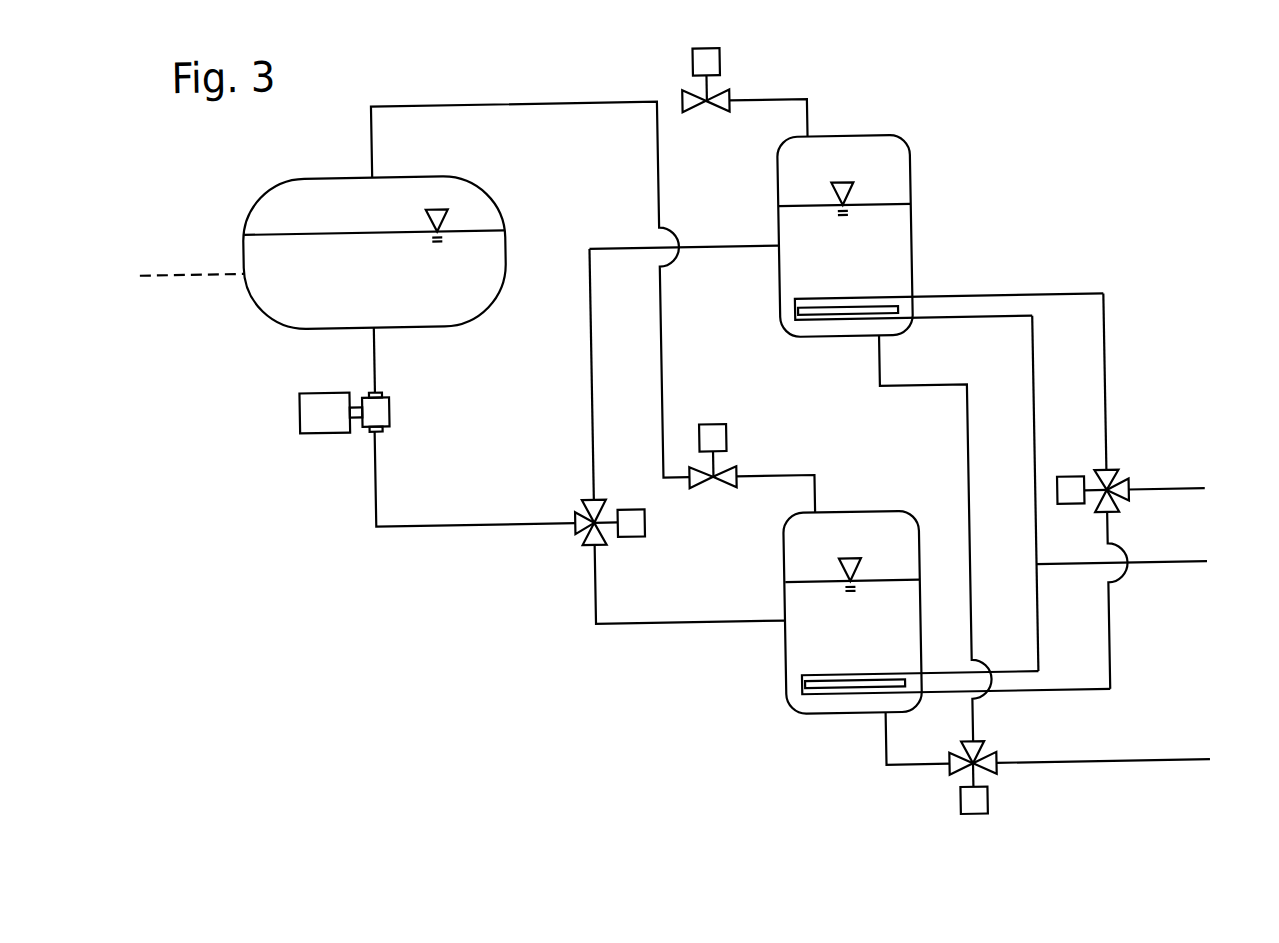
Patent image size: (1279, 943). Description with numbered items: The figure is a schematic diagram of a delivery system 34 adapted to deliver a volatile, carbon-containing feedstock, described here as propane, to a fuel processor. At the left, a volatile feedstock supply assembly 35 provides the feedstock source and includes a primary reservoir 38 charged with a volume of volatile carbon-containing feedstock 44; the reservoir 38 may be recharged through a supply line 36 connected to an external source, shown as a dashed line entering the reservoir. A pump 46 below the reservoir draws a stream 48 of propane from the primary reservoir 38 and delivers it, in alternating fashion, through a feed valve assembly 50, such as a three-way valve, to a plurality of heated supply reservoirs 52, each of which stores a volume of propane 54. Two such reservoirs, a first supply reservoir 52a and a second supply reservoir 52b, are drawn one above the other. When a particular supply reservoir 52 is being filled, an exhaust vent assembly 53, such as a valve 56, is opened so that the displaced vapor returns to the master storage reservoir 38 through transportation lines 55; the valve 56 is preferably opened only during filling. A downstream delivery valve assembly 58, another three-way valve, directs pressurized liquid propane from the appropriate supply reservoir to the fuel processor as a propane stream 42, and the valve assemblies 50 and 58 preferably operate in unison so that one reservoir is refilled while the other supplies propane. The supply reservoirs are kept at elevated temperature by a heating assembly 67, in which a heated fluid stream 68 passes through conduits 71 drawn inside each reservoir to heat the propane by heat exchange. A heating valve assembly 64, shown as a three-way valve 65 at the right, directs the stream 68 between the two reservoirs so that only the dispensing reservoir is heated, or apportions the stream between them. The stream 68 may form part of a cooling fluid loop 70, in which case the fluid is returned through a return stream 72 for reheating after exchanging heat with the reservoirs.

The delivery system 34 is at (442, 63).
The volatile feedstock supply assembly 35 is at (361, 515).
The supply line 36 is at (191, 275).
The primary reservoir 38 is at (343, 172).
The propane stream 42 is at (1155, 768).
The volatile carbon-containing feedstock 44 is at (250, 250).
The pump 46 is at (301, 407).
The stream 48 is at (449, 524).
The feed valve assembly 50 is at (592, 495).
The heated supply reservoirs 52 is at (856, 133).
The first supply reservoir 52a is at (885, 140).
The second supply reservoir 52b is at (884, 516).
The exhaust vent assembly 53 is at (672, 83).
The propane 54 is at (901, 253).
The transportation lines 55 is at (789, 100).
The valve 56 is at (731, 90).
The delivery valve assembly 58 is at (984, 780).
The heating valve assembly 64 is at (1113, 460).
The three-way valve 65 is at (1126, 497).
The heating assembly 67 is at (1181, 647).
The heated fluid stream 68 is at (1184, 498).
The cooling fluid loop 70 is at (1196, 574).
The conduits 71 is at (817, 330).
The return stream 72 is at (1146, 573).